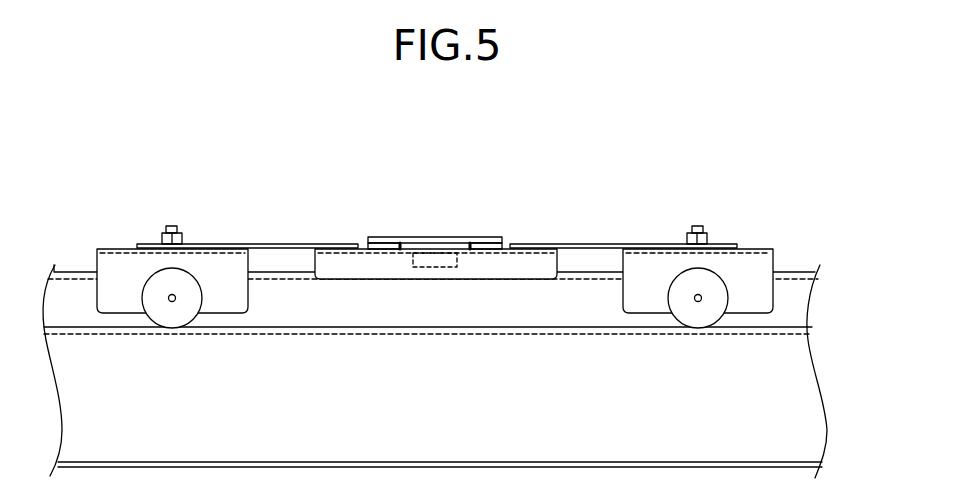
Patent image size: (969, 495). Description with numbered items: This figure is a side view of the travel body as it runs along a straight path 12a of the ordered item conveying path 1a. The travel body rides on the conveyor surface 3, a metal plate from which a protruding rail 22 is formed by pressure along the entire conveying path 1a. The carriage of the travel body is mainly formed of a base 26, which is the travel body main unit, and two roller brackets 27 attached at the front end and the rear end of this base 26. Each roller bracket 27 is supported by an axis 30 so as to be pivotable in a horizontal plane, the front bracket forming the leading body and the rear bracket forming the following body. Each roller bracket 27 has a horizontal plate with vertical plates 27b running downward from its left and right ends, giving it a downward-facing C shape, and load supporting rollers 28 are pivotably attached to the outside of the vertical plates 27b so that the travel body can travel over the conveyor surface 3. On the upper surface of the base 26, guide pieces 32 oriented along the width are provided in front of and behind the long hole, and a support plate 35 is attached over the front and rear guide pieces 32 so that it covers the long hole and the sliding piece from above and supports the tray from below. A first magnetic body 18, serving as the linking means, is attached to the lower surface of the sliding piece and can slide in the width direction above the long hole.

The ordered item conveying path 1a is at (822, 244).
The conveyor surface 3 is at (786, 326).
The straight path 12a is at (826, 289).
The first magnetic body 18 is at (437, 253).
The protruding rail 22 is at (781, 300).
The base 26 is at (530, 267).
The roller bracket 27 is at (86, 260).
The vertical plate 27b is at (148, 263).
The load supporting roller 28 is at (166, 327).
The axis 30 is at (172, 226).
The guide piece 32 is at (383, 244).
The support plate 35 is at (413, 237).